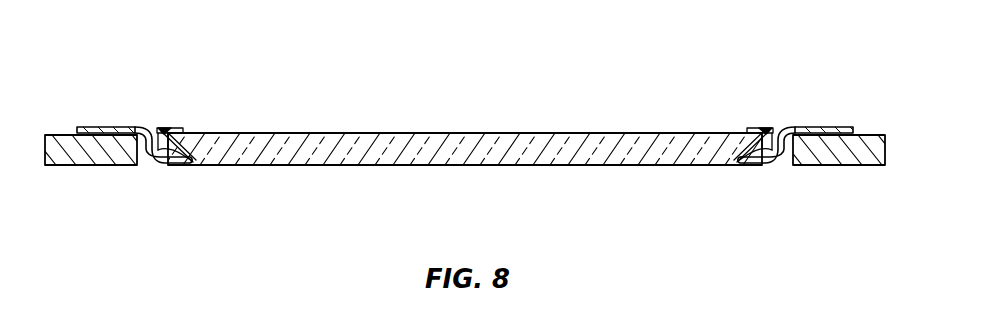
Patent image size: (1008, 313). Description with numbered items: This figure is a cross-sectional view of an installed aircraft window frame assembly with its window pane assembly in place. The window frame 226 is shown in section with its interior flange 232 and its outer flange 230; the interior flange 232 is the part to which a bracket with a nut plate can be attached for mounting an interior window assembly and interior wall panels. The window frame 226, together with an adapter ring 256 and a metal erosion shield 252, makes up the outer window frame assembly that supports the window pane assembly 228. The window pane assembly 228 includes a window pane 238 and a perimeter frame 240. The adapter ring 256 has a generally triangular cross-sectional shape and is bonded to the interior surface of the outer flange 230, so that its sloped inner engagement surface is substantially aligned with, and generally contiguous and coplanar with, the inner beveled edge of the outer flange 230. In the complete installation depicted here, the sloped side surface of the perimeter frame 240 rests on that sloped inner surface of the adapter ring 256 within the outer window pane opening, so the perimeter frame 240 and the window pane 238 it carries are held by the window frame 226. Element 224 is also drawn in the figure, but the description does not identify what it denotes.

The circuit board 224 is at (97, 165).
The window frame 226 is at (144, 113).
The window pane assembly 228 is at (176, 112).
The outer flange 230 is at (185, 164).
The interior flange 232 is at (102, 127).
The window pane 238 is at (462, 133).
The perimeter frame 240 is at (164, 131).
The metal erosion shield 252 is at (162, 166).
The adapter ring 256 is at (180, 145).